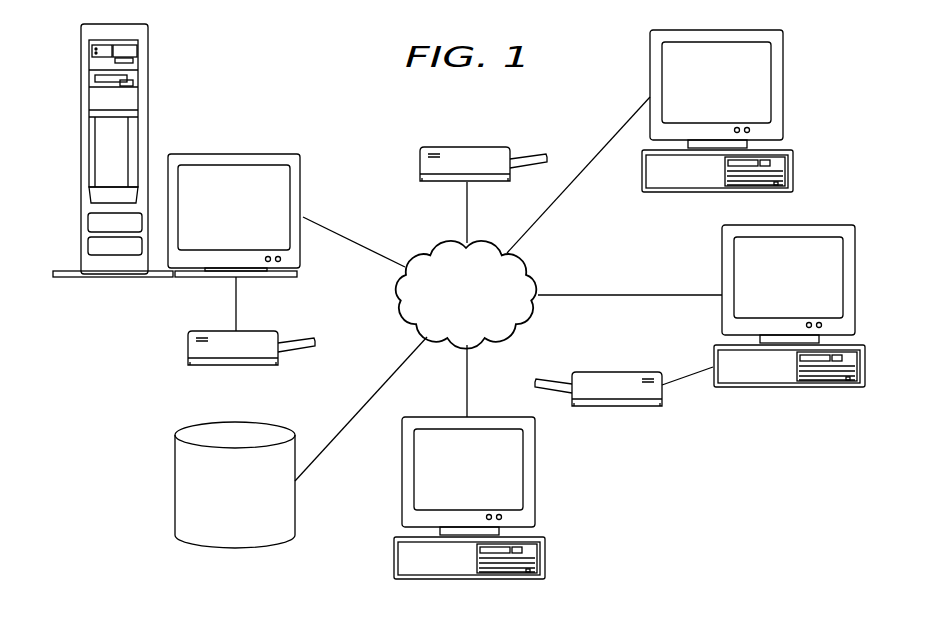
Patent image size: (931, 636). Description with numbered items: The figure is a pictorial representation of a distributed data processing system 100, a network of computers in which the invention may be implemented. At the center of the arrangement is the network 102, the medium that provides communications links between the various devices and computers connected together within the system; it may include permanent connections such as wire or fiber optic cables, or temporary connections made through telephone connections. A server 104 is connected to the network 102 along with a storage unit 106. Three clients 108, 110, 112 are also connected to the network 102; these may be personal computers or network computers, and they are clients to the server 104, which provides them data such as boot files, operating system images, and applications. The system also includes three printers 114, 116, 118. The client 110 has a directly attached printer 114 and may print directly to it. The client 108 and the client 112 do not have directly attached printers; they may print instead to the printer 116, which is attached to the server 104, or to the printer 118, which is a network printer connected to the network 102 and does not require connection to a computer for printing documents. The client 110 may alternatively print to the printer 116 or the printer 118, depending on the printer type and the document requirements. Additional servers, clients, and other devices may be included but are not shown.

The distributed data processing system 100 is at (304, 92).
The network 102 is at (449, 323).
The server 104 is at (246, 216).
The storage unit 106 is at (218, 525).
The client 108 is at (700, 95).
The client 110 is at (771, 290).
The client 112 is at (453, 483).
The printer 114 is at (618, 372).
The printer 116 is at (190, 349).
The printer 118 is at (420, 161).